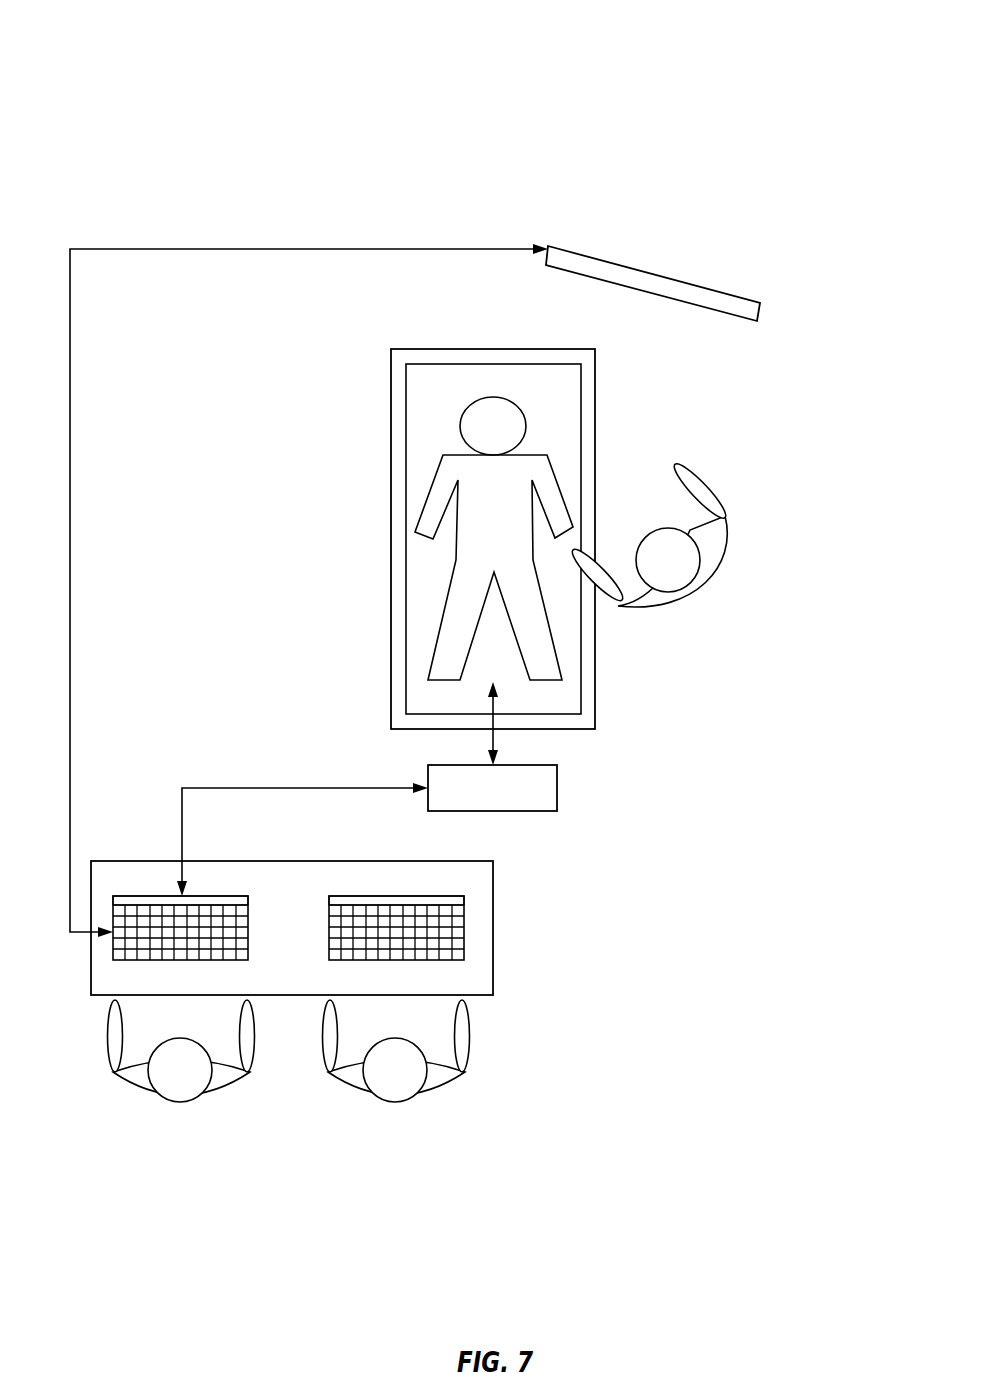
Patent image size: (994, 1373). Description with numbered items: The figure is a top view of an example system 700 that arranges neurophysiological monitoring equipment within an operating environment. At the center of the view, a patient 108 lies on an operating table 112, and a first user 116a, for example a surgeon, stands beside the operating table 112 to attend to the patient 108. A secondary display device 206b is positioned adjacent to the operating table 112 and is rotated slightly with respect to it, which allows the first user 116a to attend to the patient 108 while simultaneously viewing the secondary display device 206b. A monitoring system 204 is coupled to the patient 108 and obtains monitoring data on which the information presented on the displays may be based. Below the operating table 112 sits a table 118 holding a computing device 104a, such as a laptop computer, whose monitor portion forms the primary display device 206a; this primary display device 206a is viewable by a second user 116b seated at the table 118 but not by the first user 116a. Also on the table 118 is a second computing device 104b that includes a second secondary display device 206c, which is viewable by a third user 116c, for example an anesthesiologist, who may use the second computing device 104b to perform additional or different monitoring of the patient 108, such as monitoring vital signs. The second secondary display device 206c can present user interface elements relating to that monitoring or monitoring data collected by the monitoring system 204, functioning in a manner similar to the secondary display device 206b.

The system 700 is at (118, 41).
The operating table 112 is at (492, 349).
The patient 108 is at (413, 532).
The first user 116a is at (727, 515).
The second user 116b is at (180, 1102).
The third user 116c is at (395, 1102).
The secondary display device 206b is at (762, 302).
The monitoring system 204 is at (492, 788).
The table 118 is at (494, 925).
The computing device 104a is at (182, 960).
The second computing device 104b is at (398, 960).
The primary display device 206a is at (208, 896).
The second secondary display device 206c is at (398, 896).